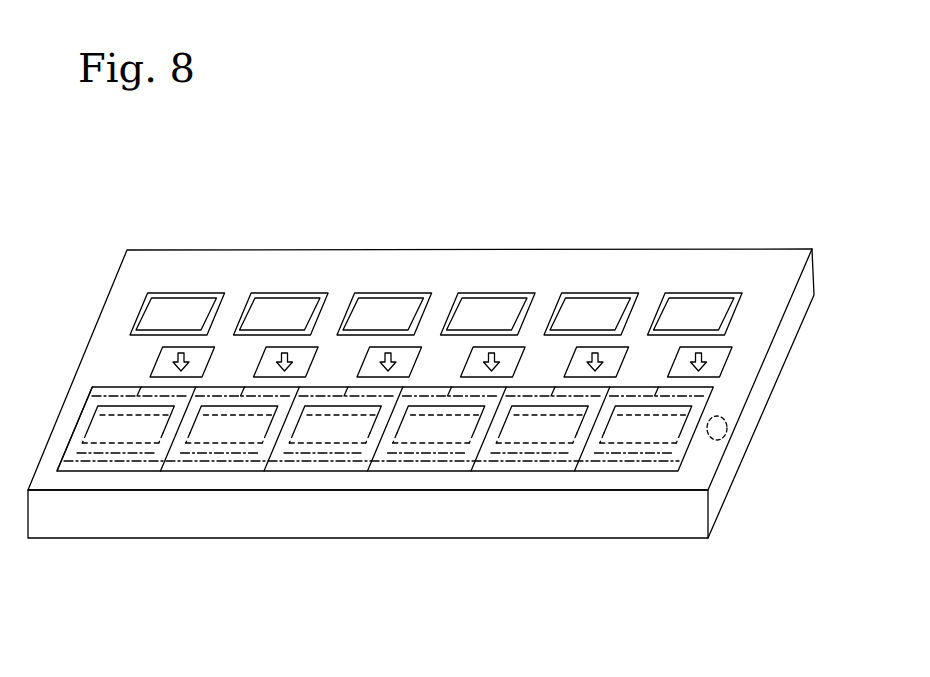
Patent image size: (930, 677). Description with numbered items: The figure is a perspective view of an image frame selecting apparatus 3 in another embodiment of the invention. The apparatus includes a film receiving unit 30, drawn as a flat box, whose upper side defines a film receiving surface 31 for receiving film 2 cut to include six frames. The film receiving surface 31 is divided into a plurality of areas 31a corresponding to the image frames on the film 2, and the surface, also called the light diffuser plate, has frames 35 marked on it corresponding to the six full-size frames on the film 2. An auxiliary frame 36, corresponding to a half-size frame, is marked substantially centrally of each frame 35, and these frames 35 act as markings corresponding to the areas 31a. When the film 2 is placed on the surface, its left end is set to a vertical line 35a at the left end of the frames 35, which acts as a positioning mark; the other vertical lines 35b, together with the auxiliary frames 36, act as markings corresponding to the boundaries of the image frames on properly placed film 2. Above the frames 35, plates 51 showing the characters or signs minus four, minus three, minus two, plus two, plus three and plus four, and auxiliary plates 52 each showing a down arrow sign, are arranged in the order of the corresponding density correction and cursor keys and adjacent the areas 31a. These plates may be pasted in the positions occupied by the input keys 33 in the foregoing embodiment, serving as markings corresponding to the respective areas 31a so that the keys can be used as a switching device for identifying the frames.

The film 2 is at (438, 462).
The image frame selecting apparatus 3 is at (388, 555).
The film receiving unit 30 is at (797, 363).
The film receiving surface 31 is at (646, 432).
The divided areas 31a is at (155, 460).
The input keys 33 is at (728, 416).
The frames 35 is at (97, 475).
The vertical line 35a is at (67, 432).
The vertical lines 35b is at (168, 455).
The auxiliary frame 36 is at (138, 396).
The plates 51 is at (205, 296).
The auxiliary plates 52 is at (622, 343).